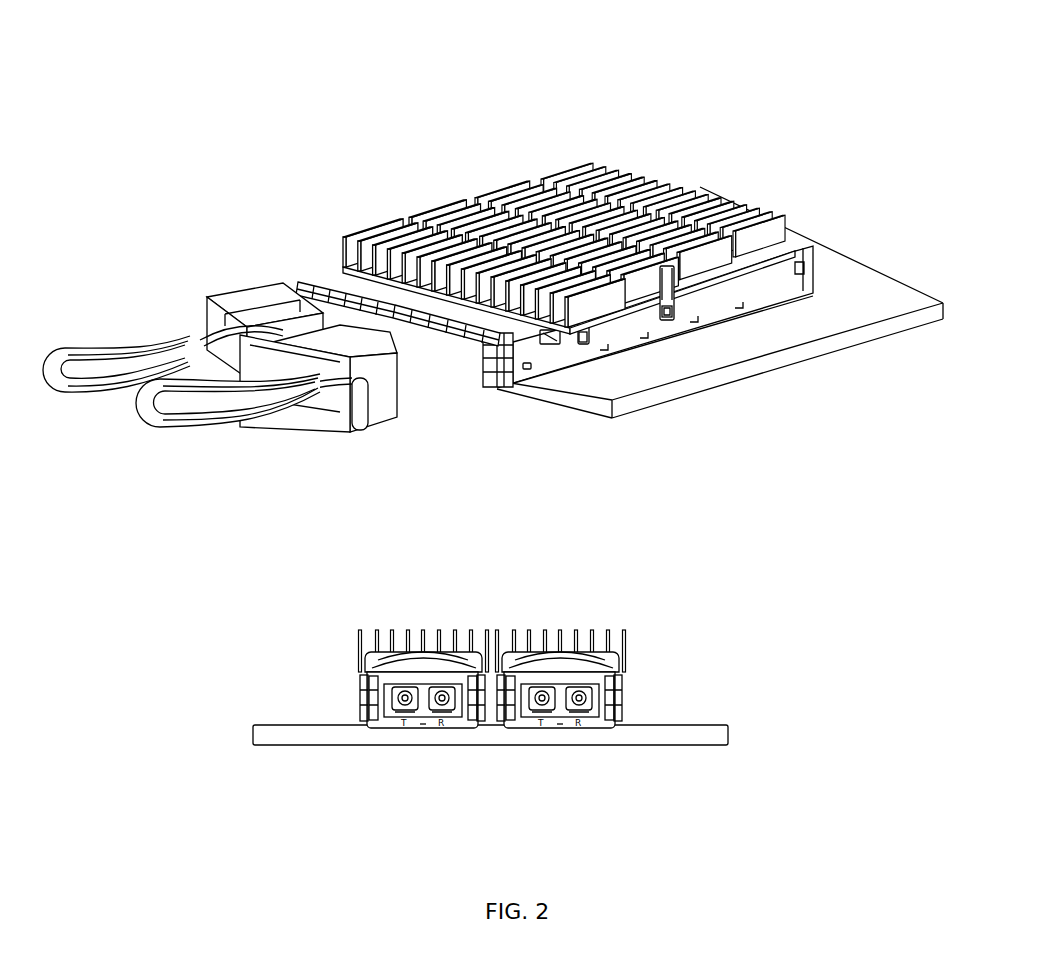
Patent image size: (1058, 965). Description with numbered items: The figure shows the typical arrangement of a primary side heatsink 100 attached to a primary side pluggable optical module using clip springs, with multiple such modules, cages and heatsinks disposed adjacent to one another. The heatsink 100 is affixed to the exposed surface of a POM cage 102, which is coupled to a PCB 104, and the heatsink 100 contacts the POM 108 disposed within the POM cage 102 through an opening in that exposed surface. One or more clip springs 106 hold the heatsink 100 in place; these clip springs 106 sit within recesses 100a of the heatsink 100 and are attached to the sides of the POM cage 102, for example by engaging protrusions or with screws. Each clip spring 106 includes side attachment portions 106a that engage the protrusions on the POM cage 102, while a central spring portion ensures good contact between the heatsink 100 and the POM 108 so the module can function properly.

The heatsink 100 is at (471, 425).
The recesses 100a is at (375, 435).
The POM cage 102 is at (803, 212).
The PCB 104 is at (870, 263).
The clip springs 106 is at (723, 193).
The side attachment portions 106a is at (680, 305).
The POM 108 is at (277, 282).